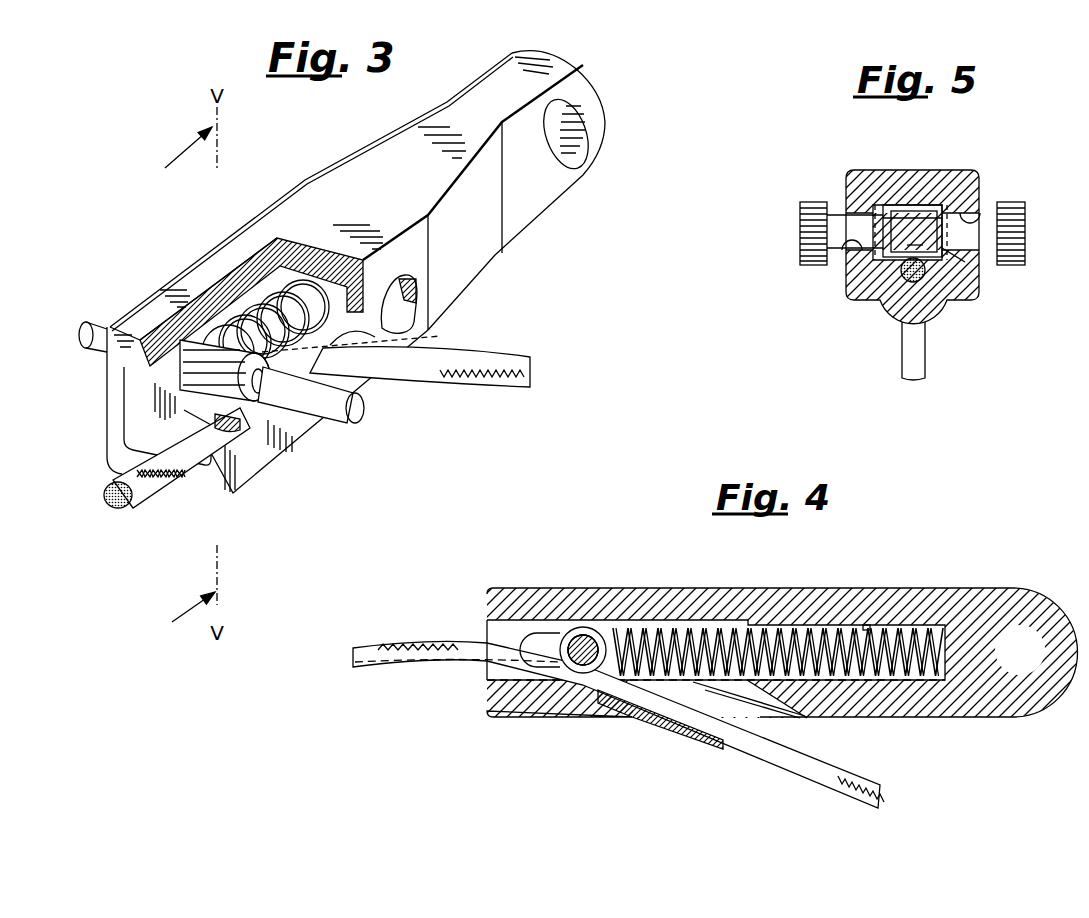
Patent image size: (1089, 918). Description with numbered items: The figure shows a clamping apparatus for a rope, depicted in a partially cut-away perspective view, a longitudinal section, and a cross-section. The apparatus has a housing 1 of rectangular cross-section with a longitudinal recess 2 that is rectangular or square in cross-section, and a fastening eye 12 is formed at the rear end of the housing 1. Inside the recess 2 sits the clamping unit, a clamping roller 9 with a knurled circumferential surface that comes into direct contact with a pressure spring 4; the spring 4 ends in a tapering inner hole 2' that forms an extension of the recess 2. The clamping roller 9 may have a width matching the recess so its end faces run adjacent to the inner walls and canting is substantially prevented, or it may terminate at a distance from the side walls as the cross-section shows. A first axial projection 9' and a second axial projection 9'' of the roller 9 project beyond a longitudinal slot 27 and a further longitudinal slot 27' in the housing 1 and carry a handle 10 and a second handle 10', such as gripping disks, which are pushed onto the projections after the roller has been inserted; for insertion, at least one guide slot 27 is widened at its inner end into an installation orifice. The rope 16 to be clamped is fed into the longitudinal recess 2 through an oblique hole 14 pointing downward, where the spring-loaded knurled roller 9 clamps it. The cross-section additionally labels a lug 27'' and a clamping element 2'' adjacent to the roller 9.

In FIG. 3, the housing 1 is at (350, 182).
In FIG. 4, the housing 1 is at (763, 598).
In FIG. 5, the housing 1 is at (900, 182).
In FIG. 4, the longitudinal recess 2 is at (660, 728).
In FIG. 4, the tapering inner hole 2' is at (778, 608).
In FIG. 3, the clamping ball / lever end 2'' is at (177, 468).
In FIG. 4, the clamping ball / lever end 2'' is at (469, 626).
In FIG. 5, the clamping ball / lever end 2'' is at (934, 300).
In FIG. 3, the pressure spring 4 is at (240, 320).
In FIG. 3, the clamping roller 9 is at (225, 430).
In FIG. 4, the clamping roller 9 is at (575, 611).
In FIG. 5, the clamping roller 9 is at (937, 219).
In FIG. 3, the axial projection 9' is at (98, 308).
In FIG. 4, the axial projection 9' is at (583, 607).
In FIG. 5, the axial projection 9' is at (848, 203).
In FIG. 3, the axial projection 9'' is at (325, 413).
In FIG. 4, the axial projection 9'' is at (596, 607).
In FIG. 5, the handle 10 is at (788, 233).
In FIG. 5, the handle 10' is at (1035, 233).
In FIG. 3, the fastening eye 12 is at (582, 153).
In FIG. 4, the oblique hole 14 is at (777, 710).
In FIG. 3, the rope 16 is at (449, 370).
In FIG. 4, the rope 16 is at (372, 660).
In FIG. 5, the rope 16 is at (900, 358).
In FIG. 3, the longitudinal slot 27 is at (301, 320).
In FIG. 4, the longitudinal slot 27 is at (532, 608).
In FIG. 5, the longitudinal slot 27 is at (835, 289).
In FIG. 5, the longitudinal slot 27' is at (996, 196).
In FIG. 3, the lug 27'' is at (446, 304).
In FIG. 5, the lug 27'' is at (976, 294).